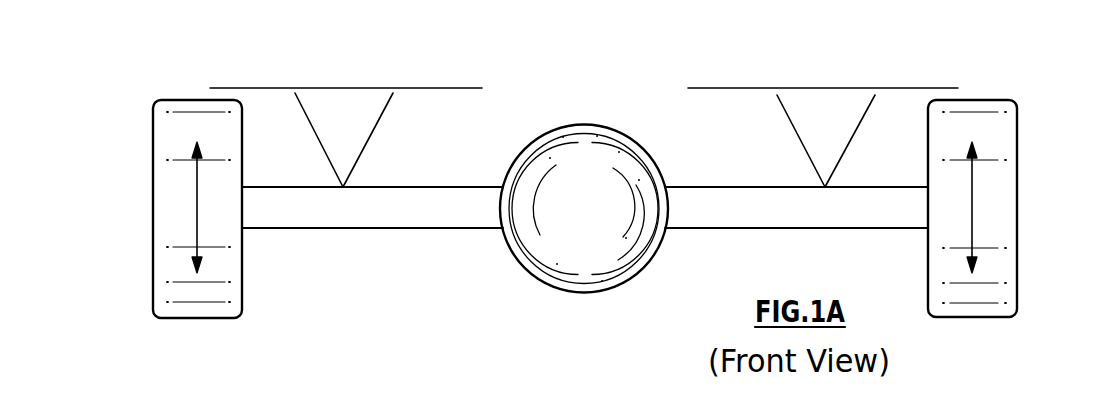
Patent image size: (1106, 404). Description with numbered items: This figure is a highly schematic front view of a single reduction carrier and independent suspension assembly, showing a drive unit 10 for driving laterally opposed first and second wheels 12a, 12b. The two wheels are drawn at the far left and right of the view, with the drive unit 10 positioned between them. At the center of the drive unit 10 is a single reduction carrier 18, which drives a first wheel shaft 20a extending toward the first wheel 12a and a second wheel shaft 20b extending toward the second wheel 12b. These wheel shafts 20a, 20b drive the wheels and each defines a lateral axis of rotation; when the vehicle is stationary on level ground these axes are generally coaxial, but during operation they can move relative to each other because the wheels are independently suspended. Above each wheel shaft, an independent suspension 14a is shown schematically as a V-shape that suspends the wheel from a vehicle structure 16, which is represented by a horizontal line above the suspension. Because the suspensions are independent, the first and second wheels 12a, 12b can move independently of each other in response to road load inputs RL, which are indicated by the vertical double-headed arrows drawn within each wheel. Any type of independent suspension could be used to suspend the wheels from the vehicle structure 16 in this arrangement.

The drive unit 10 is at (701, 45).
The first wheel 12a is at (170, 277).
The second wheel 12b is at (1002, 270).
The independent suspension 14a is at (368, 137).
The vehicle structure 16 is at (442, 88).
The single reduction carrier 18 is at (523, 270).
The first wheel shaft 20a is at (355, 215).
The second wheel shaft 20b is at (797, 215).
The road load inputs RL is at (1035, 208).